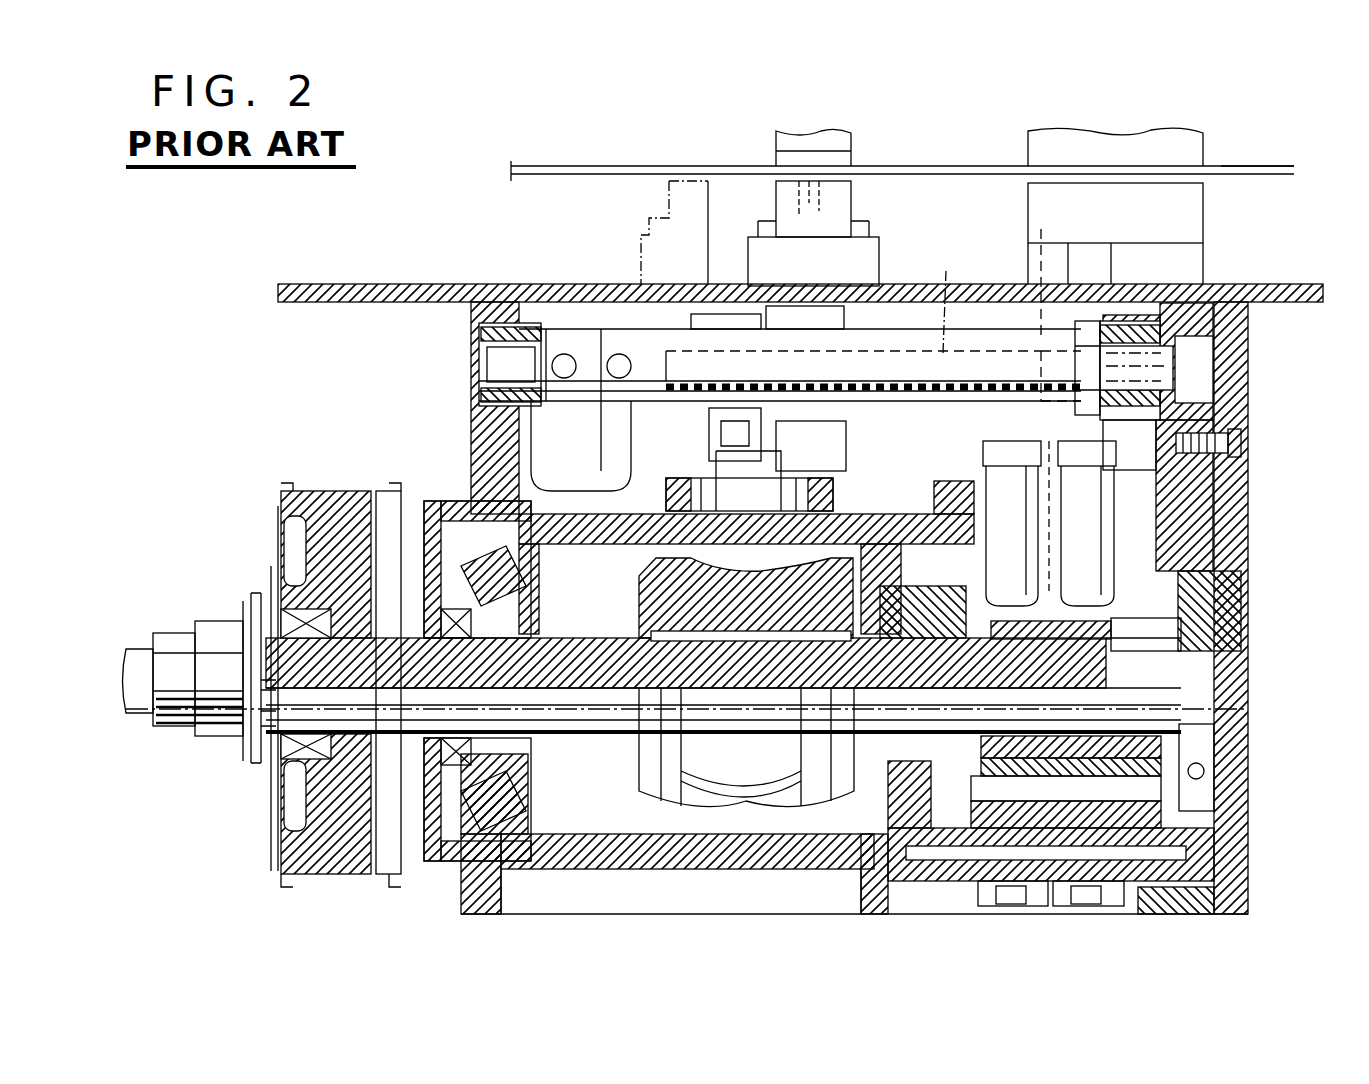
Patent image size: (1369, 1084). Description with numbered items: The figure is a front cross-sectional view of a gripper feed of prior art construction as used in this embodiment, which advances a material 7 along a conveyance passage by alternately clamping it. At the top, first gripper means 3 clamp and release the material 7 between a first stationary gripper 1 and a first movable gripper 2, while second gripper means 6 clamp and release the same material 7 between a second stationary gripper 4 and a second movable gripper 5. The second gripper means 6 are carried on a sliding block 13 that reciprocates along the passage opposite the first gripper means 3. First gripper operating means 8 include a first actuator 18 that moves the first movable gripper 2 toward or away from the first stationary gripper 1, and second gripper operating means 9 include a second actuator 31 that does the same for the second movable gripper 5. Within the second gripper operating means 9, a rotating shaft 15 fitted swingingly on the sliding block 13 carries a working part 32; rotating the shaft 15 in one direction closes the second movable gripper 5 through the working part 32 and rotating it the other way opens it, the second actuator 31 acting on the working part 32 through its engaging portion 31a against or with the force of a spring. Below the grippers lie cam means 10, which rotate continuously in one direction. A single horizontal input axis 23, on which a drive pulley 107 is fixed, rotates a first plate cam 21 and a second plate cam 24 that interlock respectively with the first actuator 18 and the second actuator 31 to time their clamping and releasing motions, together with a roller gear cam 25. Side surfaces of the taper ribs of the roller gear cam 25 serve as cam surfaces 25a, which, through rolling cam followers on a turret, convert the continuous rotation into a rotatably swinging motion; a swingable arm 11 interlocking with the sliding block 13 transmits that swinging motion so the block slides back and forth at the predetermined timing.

The first stationary gripper 1 is at (1178, 150).
The first movable gripper 2 is at (1190, 205).
The first gripper means 3 is at (1213, 164).
The second stationary gripper 4 is at (775, 142).
The second movable gripper 5 is at (840, 198).
The second gripper means 6 is at (863, 145).
The material 7 is at (594, 165).
The first gripper operating means 8 is at (1085, 908).
The second gripper operating means 9 is at (1010, 908).
The cam means 10 is at (555, 908).
The swingable arm 11 is at (835, 485).
The sliding block 13 is at (832, 432).
The rotating shaft 15 is at (780, 410).
The first actuator 18 is at (1102, 528).
The first plate cam 21 is at (1113, 620).
The input axis 23 is at (226, 742).
The second plate cam 24 is at (686, 659).
The roller gear cam 25 is at (648, 600).
The cam surfaces 25a is at (640, 795).
The second actuator 31 is at (1027, 528).
The engaging portion 31a is at (1140, 383).
The working part 32 is at (803, 267).
The drive pulley 107 is at (333, 862).